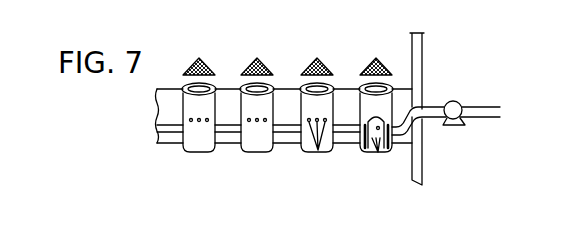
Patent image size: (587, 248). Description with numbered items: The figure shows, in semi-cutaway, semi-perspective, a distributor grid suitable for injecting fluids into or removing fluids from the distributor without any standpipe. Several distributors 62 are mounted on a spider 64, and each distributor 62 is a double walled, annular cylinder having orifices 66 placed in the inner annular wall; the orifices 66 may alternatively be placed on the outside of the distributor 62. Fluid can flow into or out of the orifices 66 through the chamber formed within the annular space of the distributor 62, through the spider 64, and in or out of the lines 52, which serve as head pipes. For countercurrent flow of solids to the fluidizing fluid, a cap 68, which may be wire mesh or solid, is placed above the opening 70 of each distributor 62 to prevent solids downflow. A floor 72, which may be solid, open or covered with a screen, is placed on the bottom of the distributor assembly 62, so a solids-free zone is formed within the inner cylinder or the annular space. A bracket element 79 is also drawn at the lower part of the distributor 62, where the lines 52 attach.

The lines 52 is at (433, 106).
The distributors 62 is at (241, 44).
The spider 64 is at (287, 146).
The orifices 66 is at (318, 152).
The cap 68 is at (323, 74).
The opening 70 is at (305, 87).
The floor 72 is at (376, 160).
The bracket 79 is at (365, 148).